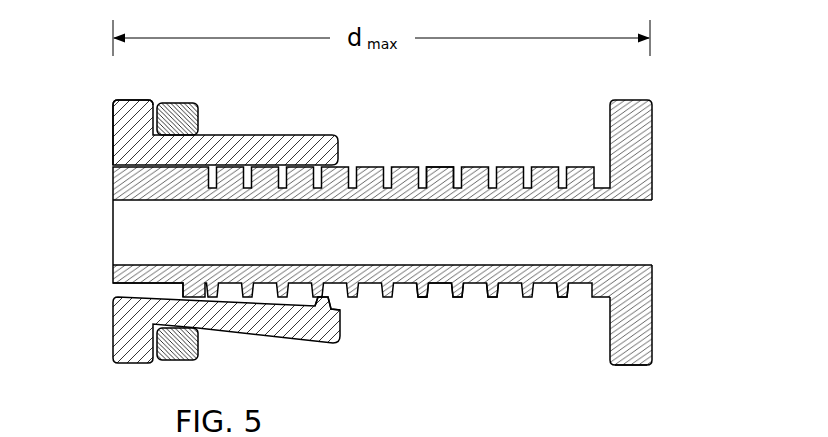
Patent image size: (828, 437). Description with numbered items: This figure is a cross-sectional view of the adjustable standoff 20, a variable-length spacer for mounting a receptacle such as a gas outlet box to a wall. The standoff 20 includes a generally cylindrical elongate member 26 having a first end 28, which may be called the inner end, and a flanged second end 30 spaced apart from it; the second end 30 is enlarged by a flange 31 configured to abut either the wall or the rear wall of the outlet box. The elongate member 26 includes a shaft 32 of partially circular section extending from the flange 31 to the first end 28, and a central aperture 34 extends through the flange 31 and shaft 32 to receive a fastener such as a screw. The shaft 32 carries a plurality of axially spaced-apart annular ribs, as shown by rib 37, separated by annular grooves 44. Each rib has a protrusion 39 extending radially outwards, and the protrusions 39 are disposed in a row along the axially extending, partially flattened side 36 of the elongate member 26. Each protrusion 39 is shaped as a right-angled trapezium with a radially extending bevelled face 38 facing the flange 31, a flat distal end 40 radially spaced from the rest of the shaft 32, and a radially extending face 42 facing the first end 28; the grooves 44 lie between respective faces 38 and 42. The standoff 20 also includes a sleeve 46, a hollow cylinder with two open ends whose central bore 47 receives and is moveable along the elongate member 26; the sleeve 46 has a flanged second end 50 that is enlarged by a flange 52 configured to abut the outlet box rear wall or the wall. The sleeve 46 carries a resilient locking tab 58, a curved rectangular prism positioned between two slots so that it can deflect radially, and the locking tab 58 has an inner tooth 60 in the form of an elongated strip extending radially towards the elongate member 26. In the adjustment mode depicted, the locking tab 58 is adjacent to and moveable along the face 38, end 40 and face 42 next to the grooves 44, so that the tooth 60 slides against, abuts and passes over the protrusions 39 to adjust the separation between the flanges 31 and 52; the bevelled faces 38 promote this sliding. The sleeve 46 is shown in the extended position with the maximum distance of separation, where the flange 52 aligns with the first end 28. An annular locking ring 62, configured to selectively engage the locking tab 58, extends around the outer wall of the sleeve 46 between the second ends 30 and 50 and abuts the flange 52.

The adjustable standoff 20 is at (684, 60).
The elongate member 26 is at (654, 148).
The first end 28 is at (113, 272).
The flanged second end 30 is at (652, 330).
The flange 31 is at (628, 366).
The shaft 32 is at (370, 167).
The central aperture 34 is at (652, 225).
The partially flattened side 36 is at (575, 299).
The annular rib 37 is at (441, 167).
The bevelled face 38 is at (452, 298).
The protrusion 39 is at (438, 299).
The flat distal end 40 is at (430, 299).
The radially extending face 42 is at (423, 298).
The annular groove 44 is at (490, 298).
The sleeve 46 is at (112, 121).
The central bore 47 is at (125, 291).
The flanged second end 50 is at (113, 143).
The flange 52 is at (135, 100).
The locking tab 58 is at (253, 317).
The inner tooth 60 is at (341, 314).
The locking ring 62 is at (197, 103).